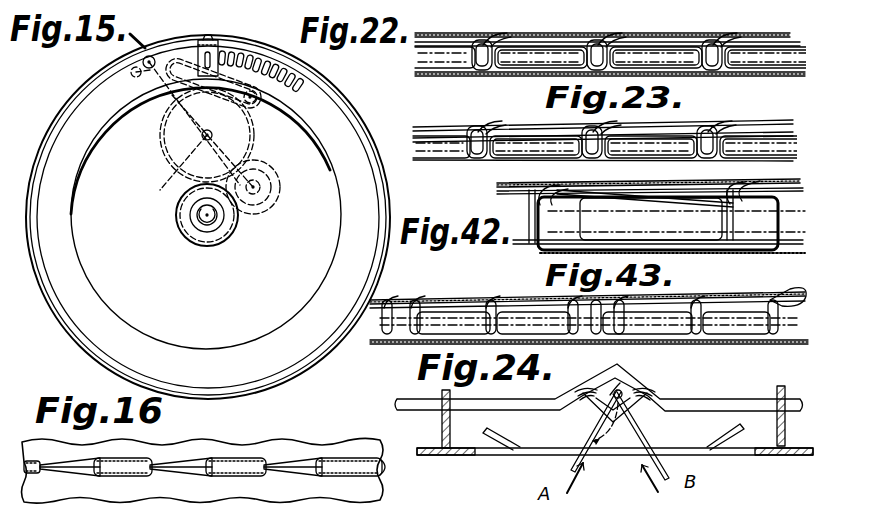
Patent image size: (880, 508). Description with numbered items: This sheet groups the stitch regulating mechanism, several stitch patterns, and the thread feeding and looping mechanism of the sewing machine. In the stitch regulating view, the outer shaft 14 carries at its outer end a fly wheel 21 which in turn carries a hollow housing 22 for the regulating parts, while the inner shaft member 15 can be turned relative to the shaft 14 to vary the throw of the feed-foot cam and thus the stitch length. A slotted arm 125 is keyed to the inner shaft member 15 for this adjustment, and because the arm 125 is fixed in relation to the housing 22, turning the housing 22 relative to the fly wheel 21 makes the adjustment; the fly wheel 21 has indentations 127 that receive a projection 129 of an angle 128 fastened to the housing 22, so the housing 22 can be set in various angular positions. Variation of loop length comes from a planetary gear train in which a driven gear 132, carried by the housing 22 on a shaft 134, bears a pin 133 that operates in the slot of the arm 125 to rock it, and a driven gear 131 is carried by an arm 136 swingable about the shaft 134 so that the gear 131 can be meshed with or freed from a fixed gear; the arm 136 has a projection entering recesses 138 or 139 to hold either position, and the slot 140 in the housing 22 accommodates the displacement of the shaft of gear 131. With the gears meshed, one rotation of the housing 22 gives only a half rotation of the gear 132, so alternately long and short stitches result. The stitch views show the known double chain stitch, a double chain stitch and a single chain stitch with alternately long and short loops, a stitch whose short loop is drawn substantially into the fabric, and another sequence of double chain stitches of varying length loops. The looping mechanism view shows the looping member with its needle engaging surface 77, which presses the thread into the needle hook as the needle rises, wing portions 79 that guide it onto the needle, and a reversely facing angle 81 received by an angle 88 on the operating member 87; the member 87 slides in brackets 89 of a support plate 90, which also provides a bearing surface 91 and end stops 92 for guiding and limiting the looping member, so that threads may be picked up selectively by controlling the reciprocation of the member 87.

In FIG. 15, the shaft 14 is at (222, 225).
In FIG. 15, the inner shaft member 15 is at (205, 228).
In FIG. 15, the fly wheel 21 is at (75, 287).
In FIG. 15, the hollow housing 22 is at (70, 335).
In FIG. 15, the slotted arm 125 is at (268, 116).
In FIG. 15, the indentations 127 is at (262, 105).
In FIG. 15, the angle 128 is at (198, 40).
In FIG. 15, the projection 129 is at (218, 42).
In FIG. 15, the driven gear 131 is at (276, 185).
In FIG. 15, the driven gear 132 is at (192, 177).
In FIG. 15, the pin 133 is at (245, 140).
In FIG. 15, the shaft 134 is at (185, 160).
In FIG. 15, the arm 136 is at (163, 130).
In FIG. 15, the recess 138 is at (150, 70).
In FIG. 15, the recess 139 is at (156, 62).
In FIG. 15, the slot 140 is at (268, 203).
In FIG. 24, the needle engaging surface 77 is at (615, 450).
In FIG. 24, the wing portions 79 is at (596, 413).
In FIG. 24, the reversely facing angle 81 is at (640, 388).
In FIG. 24, the operating member 87 is at (510, 386).
In FIG. 24, the angle 88 is at (605, 383).
In FIG. 24, the brackets 89 is at (440, 395).
In FIG. 24, the support plate 90 is at (435, 458).
In FIG. 24, the bearing surface 91 is at (566, 468).
In FIG. 24, the end stops 92 is at (500, 455).